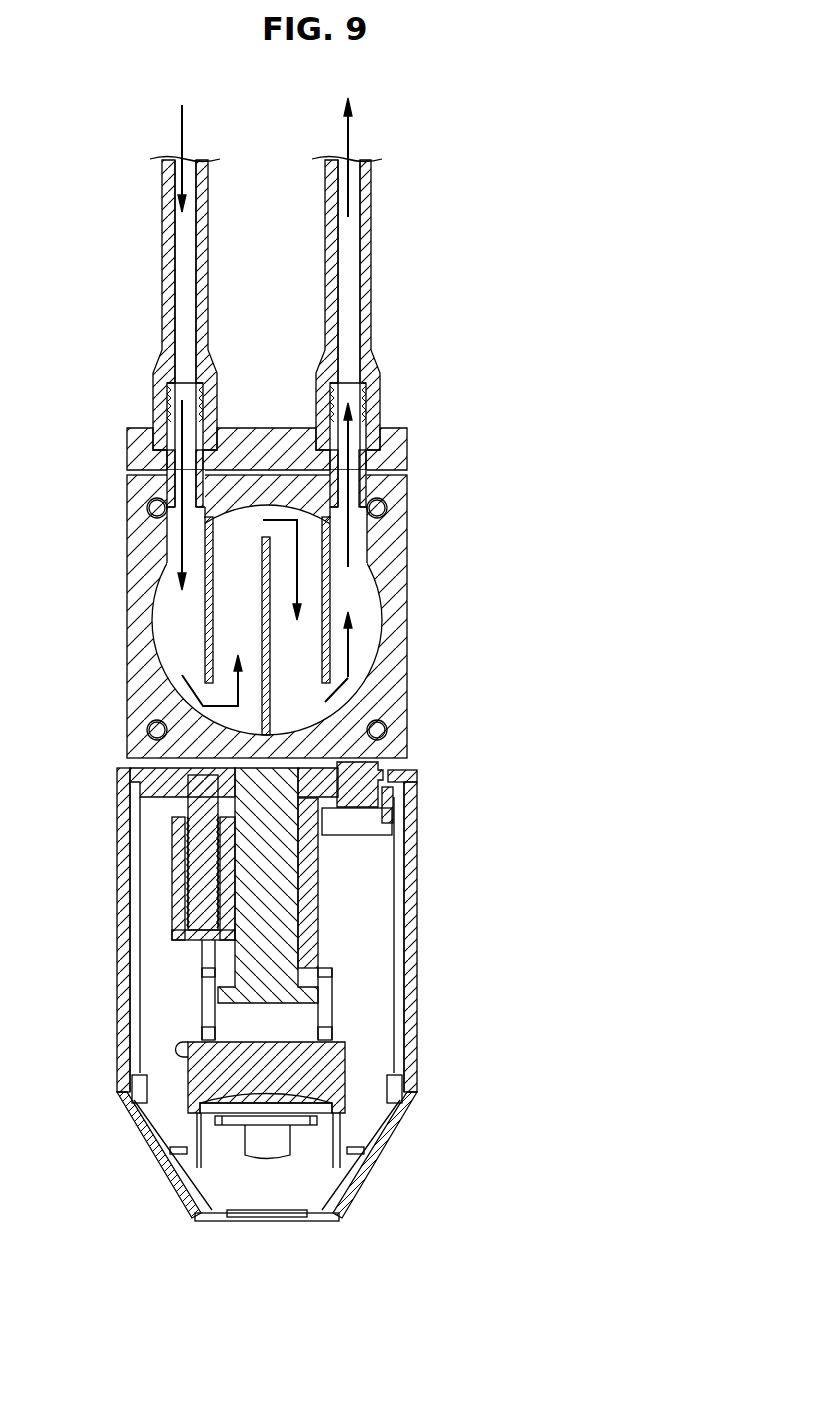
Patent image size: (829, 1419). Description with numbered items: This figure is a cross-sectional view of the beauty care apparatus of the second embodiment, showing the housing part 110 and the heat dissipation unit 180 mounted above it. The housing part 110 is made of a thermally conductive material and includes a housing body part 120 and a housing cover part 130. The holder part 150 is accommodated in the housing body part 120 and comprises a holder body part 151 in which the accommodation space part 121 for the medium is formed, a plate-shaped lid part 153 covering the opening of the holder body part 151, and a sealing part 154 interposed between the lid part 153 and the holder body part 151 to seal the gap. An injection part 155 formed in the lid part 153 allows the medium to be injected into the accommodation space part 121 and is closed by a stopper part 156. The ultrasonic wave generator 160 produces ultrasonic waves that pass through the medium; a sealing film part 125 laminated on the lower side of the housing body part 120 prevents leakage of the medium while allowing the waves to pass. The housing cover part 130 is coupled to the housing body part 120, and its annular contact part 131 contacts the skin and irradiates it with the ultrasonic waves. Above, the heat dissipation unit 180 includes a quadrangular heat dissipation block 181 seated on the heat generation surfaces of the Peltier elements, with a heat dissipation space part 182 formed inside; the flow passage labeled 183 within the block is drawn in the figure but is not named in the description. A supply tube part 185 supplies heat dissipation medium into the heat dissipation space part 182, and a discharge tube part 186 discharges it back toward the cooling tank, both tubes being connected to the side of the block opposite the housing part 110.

The housing part 110 is at (320, 1001).
The housing body part 120 is at (418, 940).
The accommodation space part 121 is at (377, 1010).
The sealing film part 125 is at (253, 1217).
The housing cover part 130 is at (402, 1135).
The contact part 131 is at (333, 1217).
The holder part 150 is at (322, 875).
The holder body part 151 is at (255, 873).
The lid part 153 is at (408, 775).
The sealing part 154 is at (408, 785).
The injection part 155 is at (387, 810).
The stopper part 156 is at (362, 772).
The ultrasonic wave generator 160 is at (302, 1075).
The heat dissipation unit 180 is at (278, 459).
The heat dissipation block 181 is at (138, 563).
The heat dissipation space part 182 is at (352, 598).
The inlet channel 183 is at (205, 607).
The supply tube part 185 is at (162, 252).
The discharge tube part 186 is at (368, 255).